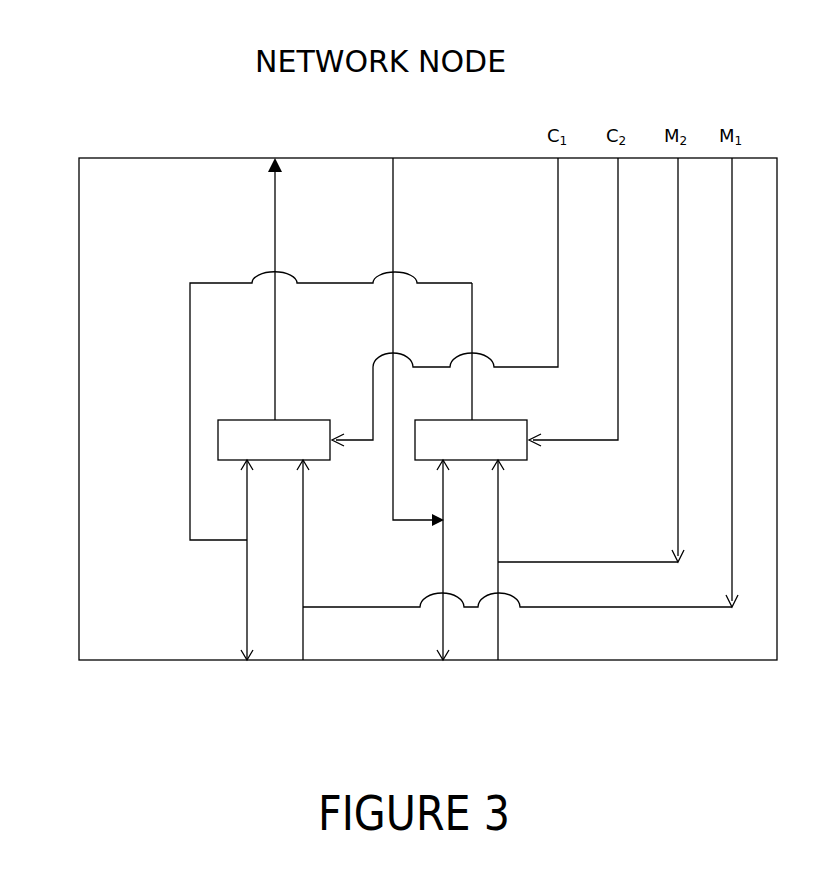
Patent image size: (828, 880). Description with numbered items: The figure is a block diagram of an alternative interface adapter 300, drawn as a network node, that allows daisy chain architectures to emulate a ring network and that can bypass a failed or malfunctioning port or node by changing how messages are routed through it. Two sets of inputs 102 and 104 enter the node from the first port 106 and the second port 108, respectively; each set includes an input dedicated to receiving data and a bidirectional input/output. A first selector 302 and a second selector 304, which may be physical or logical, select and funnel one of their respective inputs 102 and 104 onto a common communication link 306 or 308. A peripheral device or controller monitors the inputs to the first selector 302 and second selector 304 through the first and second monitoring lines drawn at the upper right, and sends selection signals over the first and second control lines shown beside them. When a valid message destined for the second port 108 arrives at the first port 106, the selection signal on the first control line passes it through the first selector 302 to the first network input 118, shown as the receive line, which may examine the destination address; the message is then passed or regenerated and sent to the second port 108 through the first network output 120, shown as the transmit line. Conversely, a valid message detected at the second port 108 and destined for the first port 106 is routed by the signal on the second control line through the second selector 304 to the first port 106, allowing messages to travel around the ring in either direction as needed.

The interface adapter 300 is at (745, 76).
The first network input 118 is at (287, 122).
The first network output 120 is at (395, 122).
The first selector 302 is at (287, 420).
The second selector 304 is at (489, 420).
The common communication link 306 is at (282, 306).
The common communication link 308 is at (478, 308).
The set of inputs 102 is at (276, 630).
The set of inputs 104 is at (458, 634).
The first port 106 is at (226, 702).
The second port 108 is at (520, 702).